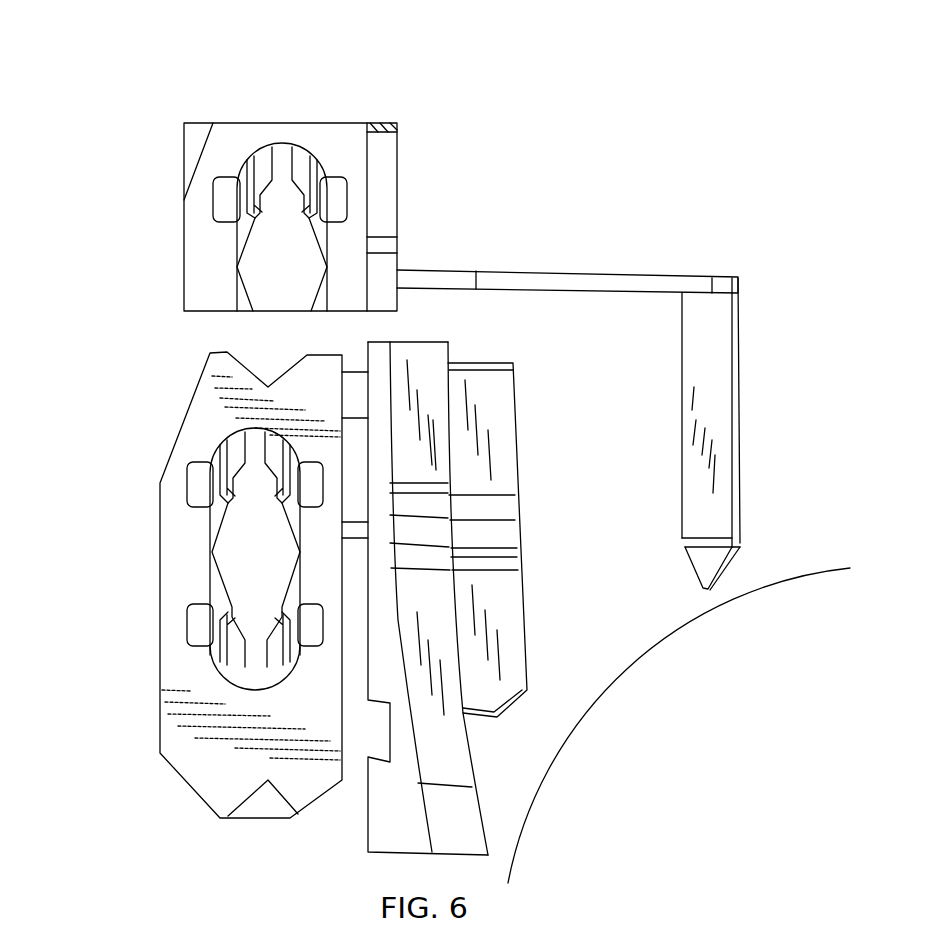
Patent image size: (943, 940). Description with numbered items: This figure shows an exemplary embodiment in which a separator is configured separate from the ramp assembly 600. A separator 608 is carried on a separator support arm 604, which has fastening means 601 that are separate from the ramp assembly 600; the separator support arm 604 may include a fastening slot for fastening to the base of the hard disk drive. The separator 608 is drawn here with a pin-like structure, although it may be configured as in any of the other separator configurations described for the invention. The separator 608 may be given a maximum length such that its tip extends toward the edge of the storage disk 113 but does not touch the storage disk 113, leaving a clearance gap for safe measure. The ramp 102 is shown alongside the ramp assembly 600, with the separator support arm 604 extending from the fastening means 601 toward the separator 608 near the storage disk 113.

The fastening means 601 is at (225, 130).
The separator support arm 604 is at (572, 255).
The separator 608 is at (685, 478).
The storage disk 113 is at (713, 608).
The ramp 102 is at (447, 743).
The ramp assembly 600 is at (156, 620).